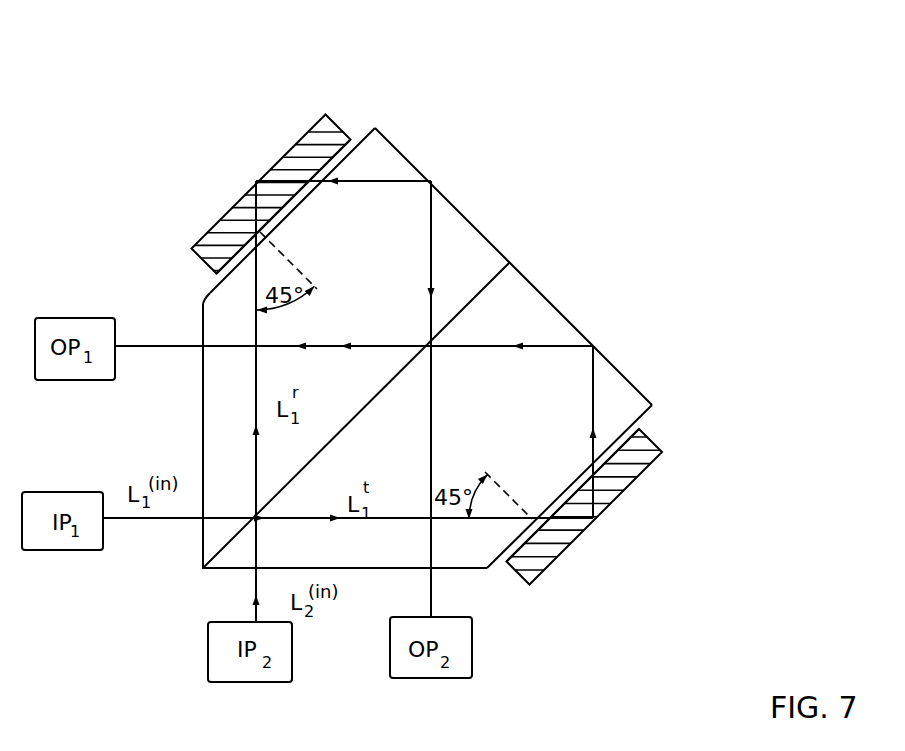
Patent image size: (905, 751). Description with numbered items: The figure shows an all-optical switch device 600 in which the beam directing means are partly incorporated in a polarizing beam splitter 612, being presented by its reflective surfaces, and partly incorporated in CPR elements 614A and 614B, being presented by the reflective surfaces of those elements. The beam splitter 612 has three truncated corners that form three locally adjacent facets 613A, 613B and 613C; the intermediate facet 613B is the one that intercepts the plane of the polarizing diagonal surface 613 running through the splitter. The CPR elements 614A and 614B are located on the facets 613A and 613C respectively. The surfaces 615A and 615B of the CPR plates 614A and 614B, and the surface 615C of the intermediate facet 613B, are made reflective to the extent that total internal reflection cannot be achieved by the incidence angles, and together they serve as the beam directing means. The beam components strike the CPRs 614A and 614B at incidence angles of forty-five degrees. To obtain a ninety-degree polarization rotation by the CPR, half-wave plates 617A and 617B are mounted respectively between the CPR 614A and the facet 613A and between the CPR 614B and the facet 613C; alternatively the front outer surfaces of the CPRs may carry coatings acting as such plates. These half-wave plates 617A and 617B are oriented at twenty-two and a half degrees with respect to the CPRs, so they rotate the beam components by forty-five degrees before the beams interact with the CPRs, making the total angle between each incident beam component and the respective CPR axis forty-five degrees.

The all-optical switch device 600 is at (208, 163).
The polarizing beam splitter 612 is at (190, 303).
The polarizing diagonal surface 613 is at (468, 305).
The facet 613A is at (361, 142).
The intermediate facet 613B is at (406, 158).
The facet 613C is at (644, 411).
The CPR element 614A is at (268, 148).
The CPR element 614B is at (668, 469).
The surface of CPR plate 615A is at (214, 225).
The surface of CPR plate 615B is at (624, 478).
The surface of facet 615C is at (476, 229).
The λ/2-plate 617A is at (283, 212).
The λ/2-plate 617B is at (566, 493).